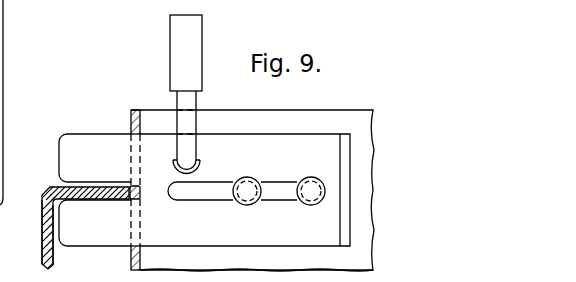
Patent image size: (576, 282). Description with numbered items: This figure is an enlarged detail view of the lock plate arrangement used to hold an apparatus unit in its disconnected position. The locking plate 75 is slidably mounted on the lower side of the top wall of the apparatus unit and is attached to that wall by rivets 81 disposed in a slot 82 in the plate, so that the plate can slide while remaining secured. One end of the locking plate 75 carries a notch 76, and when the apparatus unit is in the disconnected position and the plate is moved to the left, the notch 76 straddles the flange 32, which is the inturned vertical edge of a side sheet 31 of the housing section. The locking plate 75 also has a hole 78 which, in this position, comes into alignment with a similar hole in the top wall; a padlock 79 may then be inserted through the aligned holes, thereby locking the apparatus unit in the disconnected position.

The padlock 79 is at (202, 48).
The hole 78 is at (200, 158).
The locking plate 75 is at (95, 133).
The notch 76 is at (103, 200).
The flange 32 is at (53, 187).
The side sheet 31 is at (42, 245).
The slot 82 is at (274, 182).
The rivets 81 is at (307, 200).